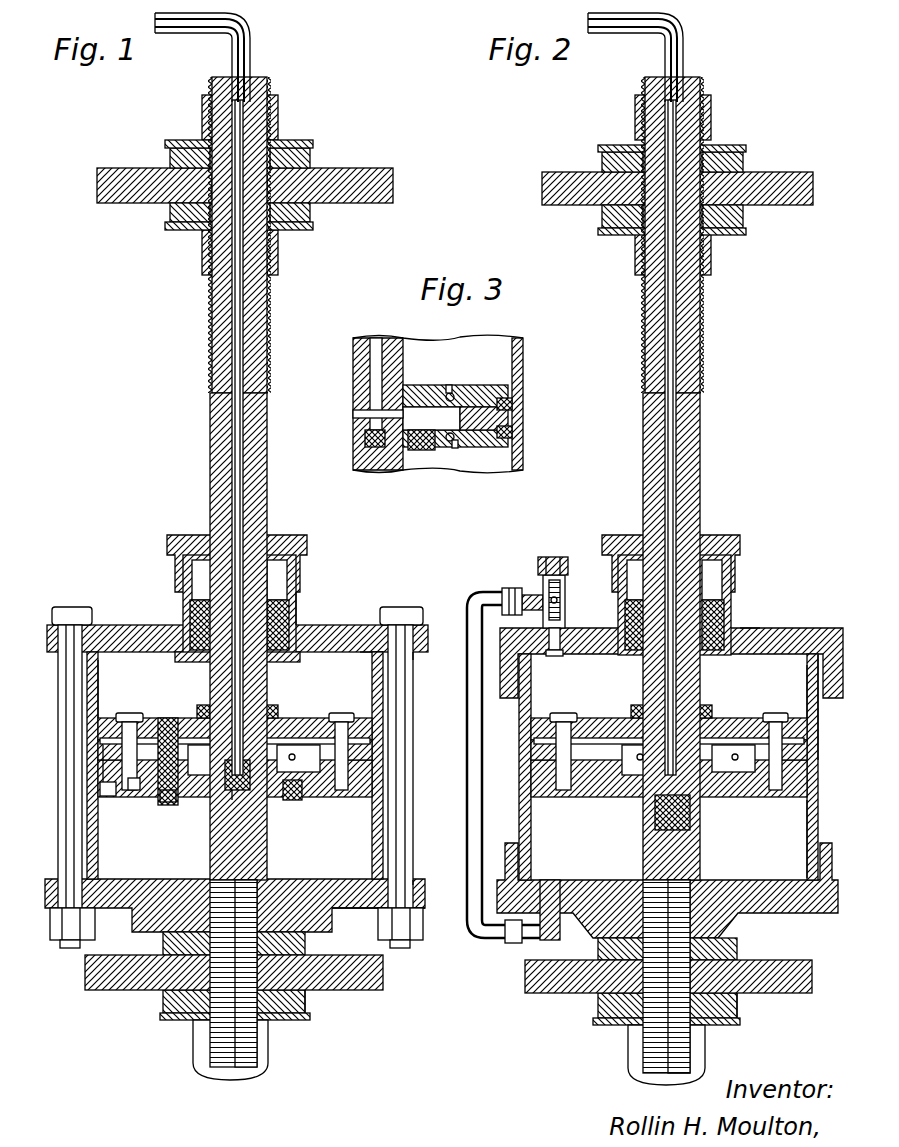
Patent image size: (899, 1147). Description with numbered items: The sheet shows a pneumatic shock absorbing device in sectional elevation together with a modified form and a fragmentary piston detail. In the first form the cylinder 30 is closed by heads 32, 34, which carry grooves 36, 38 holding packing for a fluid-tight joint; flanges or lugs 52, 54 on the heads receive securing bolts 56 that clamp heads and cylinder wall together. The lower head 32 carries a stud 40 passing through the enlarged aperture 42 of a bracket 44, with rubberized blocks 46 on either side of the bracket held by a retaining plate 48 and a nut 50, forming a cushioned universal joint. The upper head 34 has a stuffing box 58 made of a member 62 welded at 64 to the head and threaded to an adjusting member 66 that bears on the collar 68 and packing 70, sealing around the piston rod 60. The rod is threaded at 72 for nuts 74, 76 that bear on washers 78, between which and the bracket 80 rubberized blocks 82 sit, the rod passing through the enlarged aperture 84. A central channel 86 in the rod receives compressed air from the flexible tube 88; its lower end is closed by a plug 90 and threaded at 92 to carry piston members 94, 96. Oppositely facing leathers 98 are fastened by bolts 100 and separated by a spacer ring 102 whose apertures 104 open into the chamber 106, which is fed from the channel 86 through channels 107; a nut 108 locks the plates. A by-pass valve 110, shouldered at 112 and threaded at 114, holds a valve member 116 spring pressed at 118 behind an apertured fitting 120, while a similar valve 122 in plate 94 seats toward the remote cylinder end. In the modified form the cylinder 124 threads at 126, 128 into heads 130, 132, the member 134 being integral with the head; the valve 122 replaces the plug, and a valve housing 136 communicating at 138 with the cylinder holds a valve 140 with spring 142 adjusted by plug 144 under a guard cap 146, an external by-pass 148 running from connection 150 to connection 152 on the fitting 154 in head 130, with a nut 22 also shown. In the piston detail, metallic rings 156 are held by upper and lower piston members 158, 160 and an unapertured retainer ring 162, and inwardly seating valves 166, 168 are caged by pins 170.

In FIG. 2, the nut 22 is at (670, 812).
In FIG. 1, the cylinder 30 is at (87, 800).
In FIG. 2, the cylinder 30 is at (668, 767).
In FIG. 1, the head 32 is at (118, 908).
In FIG. 1, the head 34 is at (335, 625).
In FIG. 1, the groove 36 is at (370, 908).
In FIG. 1, the groove 38 is at (374, 625).
In FIG. 1, the stud 40 is at (190, 950).
In FIG. 2, the stud 40 is at (620, 1010).
In FIG. 1, the enlarged aperture 42 is at (218, 1005).
In FIG. 1, the bracket 44 is at (350, 990).
In FIG. 2, the bracket 44 is at (812, 978).
In FIG. 1, the rubberized blocks 46 is at (300, 1000).
In FIG. 2, the rubberized blocks 46 is at (745, 1000).
In FIG. 1, the retaining plate 48 is at (165, 1017).
In FIG. 2, the retaining plate 48 is at (740, 1022).
In FIG. 1, the nut 50 is at (193, 1046).
In FIG. 2, the nut 50 is at (628, 1050).
In FIG. 1, the flange 52 is at (418, 880).
In FIG. 1, the flange 54 is at (418, 652).
In FIG. 1, the securing bolts 56 is at (400, 607).
In FIG. 1, the stuffing box 58 is at (307, 580).
In FIG. 2, the stuffing box 58 is at (740, 575).
In FIG. 1, the piston rod 60 is at (212, 465).
In FIG. 2, the piston rod 60 is at (694, 609).
In FIG. 1, the stuffing box member 62 is at (180, 620).
In FIG. 1, the weld 64 is at (290, 620).
In FIG. 1, the adjusting member 66 is at (284, 535).
In FIG. 2, the adjusting member 66 is at (735, 545).
In FIG. 1, the collar 68 is at (198, 535).
In FIG. 2, the collar 68 is at (700, 545).
In FIG. 1, the packing 70 is at (185, 600).
In FIG. 1, the threaded portion 72 is at (268, 310).
In FIG. 2, the threaded portion 72 is at (696, 235).
In FIG. 1, the nut 74 is at (278, 255).
In FIG. 2, the nut 74 is at (695, 253).
In FIG. 1, the nut 76 is at (278, 108).
In FIG. 2, the nut 76 is at (690, 103).
In FIG. 1, the washers 78 is at (190, 141).
In FIG. 2, the washers 78 is at (687, 174).
In FIG. 1, the bracket 80 is at (383, 170).
In FIG. 2, the bracket 80 is at (805, 172).
In FIG. 3, the bracket 80 is at (376, 345).
In FIG. 1, the rubberized blocks 82 is at (305, 178).
In FIG. 2, the rubberized blocks 82 is at (694, 179).
In FIG. 1, the enlarged aperture 84 is at (175, 190).
In FIG. 1, the central channel 86 is at (243, 465).
In FIG. 2, the central channel 86 is at (708, 437).
In FIG. 1, the flexible tube 88 is at (252, 45).
In FIG. 2, the flexible tube 88 is at (659, 57).
In FIG. 1, the plug 90 is at (245, 790).
In FIG. 3, the plug 90 is at (376, 450).
In FIG. 1, the threaded portion 92 is at (235, 795).
In FIG. 1, the piston member 94 is at (340, 785).
In FIG. 1, the piston member 96 is at (290, 718).
In FIG. 2, the piston member 96 is at (669, 729).
In FIG. 1, the leathers 98 is at (372, 745).
In FIG. 2, the leathers 98 is at (807, 750).
In FIG. 1, the bolts 100 is at (340, 713).
In FIG. 2, the bolts 100 is at (775, 713).
In FIG. 1, the spacer ring 102 is at (320, 795).
In FIG. 2, the spacer ring 102 is at (735, 798).
In FIG. 1, the apertures 104 is at (87, 748).
In FIG. 2, the apertures 104 is at (620, 775).
In FIG. 1, the chamber 106 is at (185, 738).
In FIG. 3, the chamber 106 is at (420, 405).
In FIG. 1, the channels 107 is at (205, 705).
In FIG. 2, the channels 107 is at (706, 715).
In FIG. 3, the channels 107 is at (353, 413).
In FIG. 1, the nut 108 is at (272, 705).
In FIG. 1, the by-pass valve 110 is at (128, 790).
In FIG. 1, the shoulder 112 is at (160, 790).
In FIG. 1, the threaded portion 114 is at (140, 718).
In FIG. 1, the valve member 116 is at (175, 790).
In FIG. 1, the spring 118 is at (165, 800).
In FIG. 1, the apertured fitting 120 is at (185, 800).
In FIG. 1, the valve 122 is at (292, 800).
In FIG. 3, the valve 122 is at (418, 450).
In FIG. 2, the cylinder 124 is at (810, 730).
In FIG. 2, the threaded engagement 126 is at (807, 862).
In FIG. 2, the threaded engagement 128 is at (807, 672).
In FIG. 2, the head 130 is at (790, 910).
In FIG. 2, the head 132 is at (790, 628).
In FIG. 2, the member 134 is at (733, 615).
In FIG. 2, the valve housing 136 is at (567, 612).
In FIG. 2, the communication 138 is at (558, 650).
In FIG. 2, the valve 140 is at (565, 595).
In FIG. 2, the spring 142 is at (540, 565).
In FIG. 2, the plug 144 is at (548, 556).
In FIG. 2, the guard cap 146 is at (562, 556).
In FIG. 2, the by-pass 148 is at (468, 607).
In FIG. 2, the connection 150 is at (507, 590).
In FIG. 2, the connection 152 is at (510, 945).
In FIG. 2, the fitting 154 is at (552, 945).
In FIG. 3, the metallic rings 156 is at (512, 410).
In FIG. 3, the upper piston member 158 is at (470, 385).
In FIG. 3, the lower piston member 160 is at (490, 447).
In FIG. 3, the retainer ring 162 is at (523, 365).
In FIG. 3, the valve 166 is at (452, 393).
In FIG. 3, the valve 168 is at (450, 442).
In FIG. 3, the pins 170 is at (448, 385).